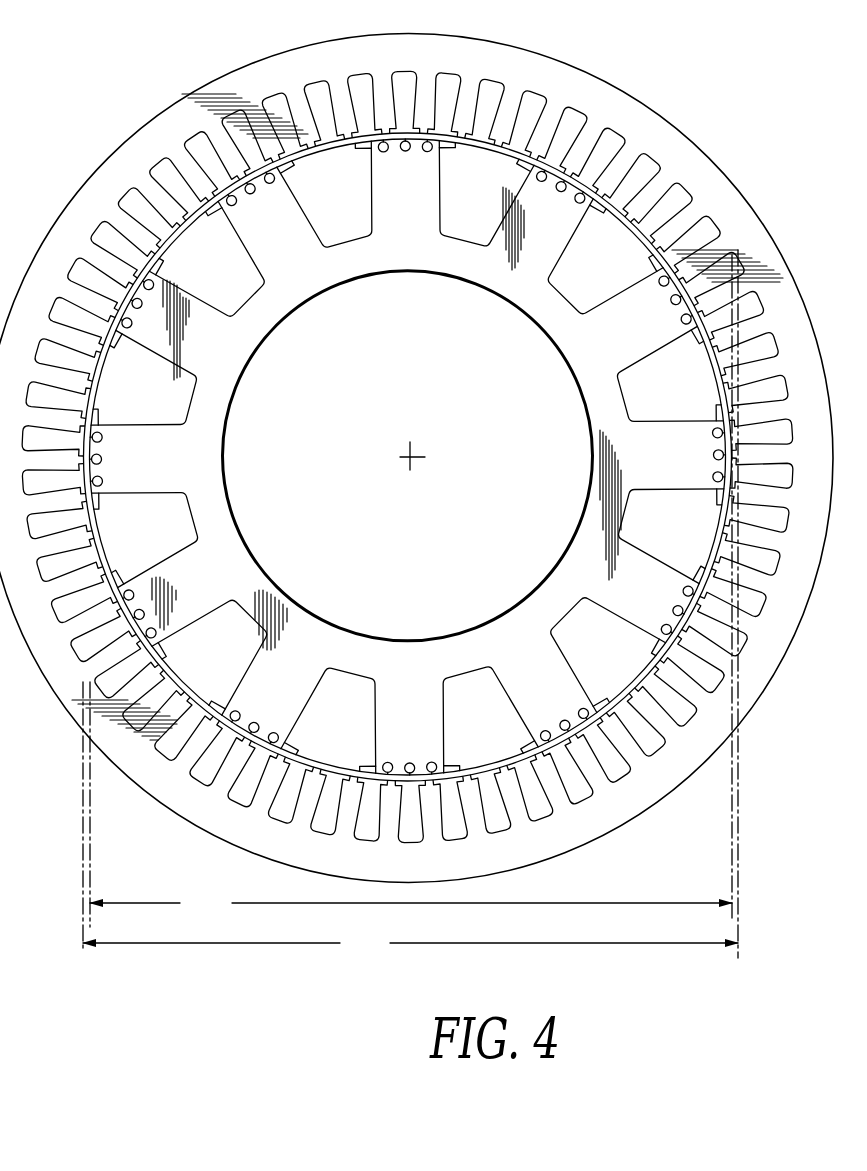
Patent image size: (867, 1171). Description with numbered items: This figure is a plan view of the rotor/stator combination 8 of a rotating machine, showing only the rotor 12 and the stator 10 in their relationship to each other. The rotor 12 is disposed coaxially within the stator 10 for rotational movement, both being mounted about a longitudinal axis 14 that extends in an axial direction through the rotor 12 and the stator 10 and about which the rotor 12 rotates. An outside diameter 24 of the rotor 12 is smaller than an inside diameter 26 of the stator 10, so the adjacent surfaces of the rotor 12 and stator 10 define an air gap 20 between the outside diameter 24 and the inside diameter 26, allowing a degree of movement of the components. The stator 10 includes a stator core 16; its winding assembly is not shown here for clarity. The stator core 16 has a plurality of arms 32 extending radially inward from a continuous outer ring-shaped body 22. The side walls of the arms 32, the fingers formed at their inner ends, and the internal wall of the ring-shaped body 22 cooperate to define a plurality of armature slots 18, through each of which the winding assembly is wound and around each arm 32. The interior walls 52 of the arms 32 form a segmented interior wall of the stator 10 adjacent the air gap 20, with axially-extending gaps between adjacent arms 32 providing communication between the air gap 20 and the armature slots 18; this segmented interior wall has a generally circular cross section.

The rotor/stator combination 8 is at (618, 76).
The stator 10 is at (655, 125).
The rotor 12 is at (241, 343).
The longitudinal axis 14 is at (413, 453).
The stator core 16 is at (128, 132).
The armature slot 18 is at (312, 98).
The air gap 20 is at (478, 147).
The outer ring-shaped body 22 is at (752, 208).
The outside diameter 24 is at (411, 591).
The inside diameter 26 is at (410, 604).
The arm 32 is at (87, 247).
The interior wall 52 is at (318, 143).